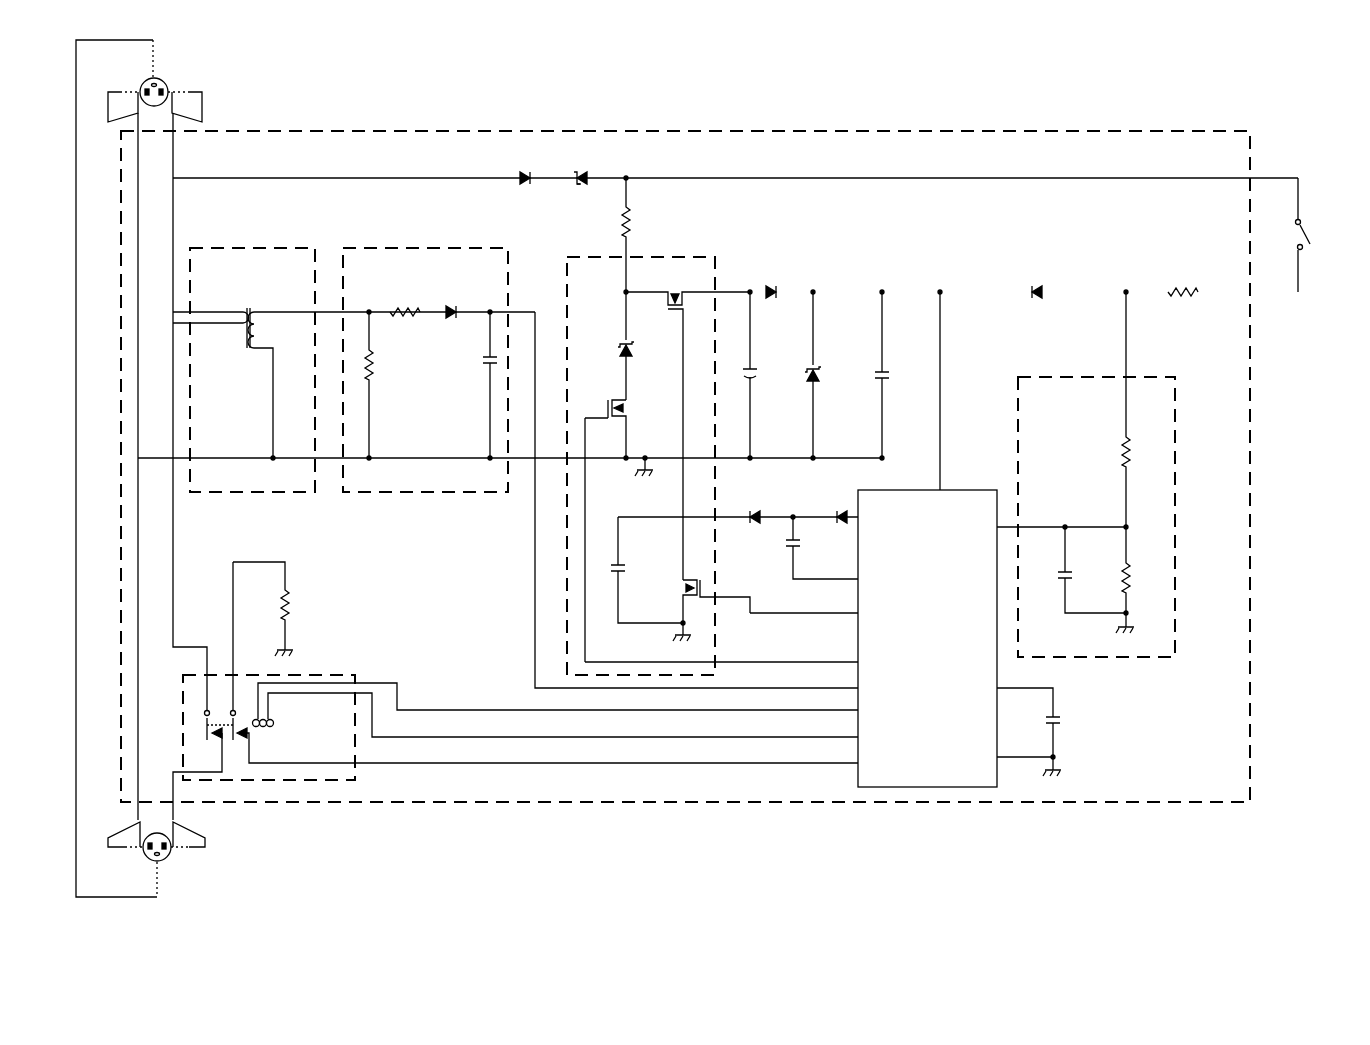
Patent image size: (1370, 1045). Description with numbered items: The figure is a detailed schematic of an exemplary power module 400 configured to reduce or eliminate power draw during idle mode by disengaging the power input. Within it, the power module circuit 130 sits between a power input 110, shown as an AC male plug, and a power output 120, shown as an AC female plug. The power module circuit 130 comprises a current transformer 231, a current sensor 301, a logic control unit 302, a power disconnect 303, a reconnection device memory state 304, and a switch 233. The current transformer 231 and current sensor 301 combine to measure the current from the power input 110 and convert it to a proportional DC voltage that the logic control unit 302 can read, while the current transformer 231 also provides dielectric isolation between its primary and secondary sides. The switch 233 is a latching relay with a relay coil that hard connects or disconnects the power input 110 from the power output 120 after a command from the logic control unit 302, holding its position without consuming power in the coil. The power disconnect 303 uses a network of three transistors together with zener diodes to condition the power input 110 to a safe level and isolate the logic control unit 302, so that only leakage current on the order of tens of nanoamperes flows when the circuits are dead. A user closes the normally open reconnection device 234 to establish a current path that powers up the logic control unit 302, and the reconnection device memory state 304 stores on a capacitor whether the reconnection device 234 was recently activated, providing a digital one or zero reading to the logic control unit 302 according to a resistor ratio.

The power input 110 is at (205, 92).
The power output 120 is at (226, 848).
The power module circuit 130 is at (1092, 130).
The current transformer 231 is at (248, 247).
The switch 233 is at (320, 673).
The reconnection device 234 is at (1310, 228).
The current sensor 301 is at (407, 245).
The logic control unit 302 is at (957, 488).
The power disconnect 303 is at (697, 255).
The reconnection device memory state 304 is at (1038, 377).
The power module 400 is at (918, 97).